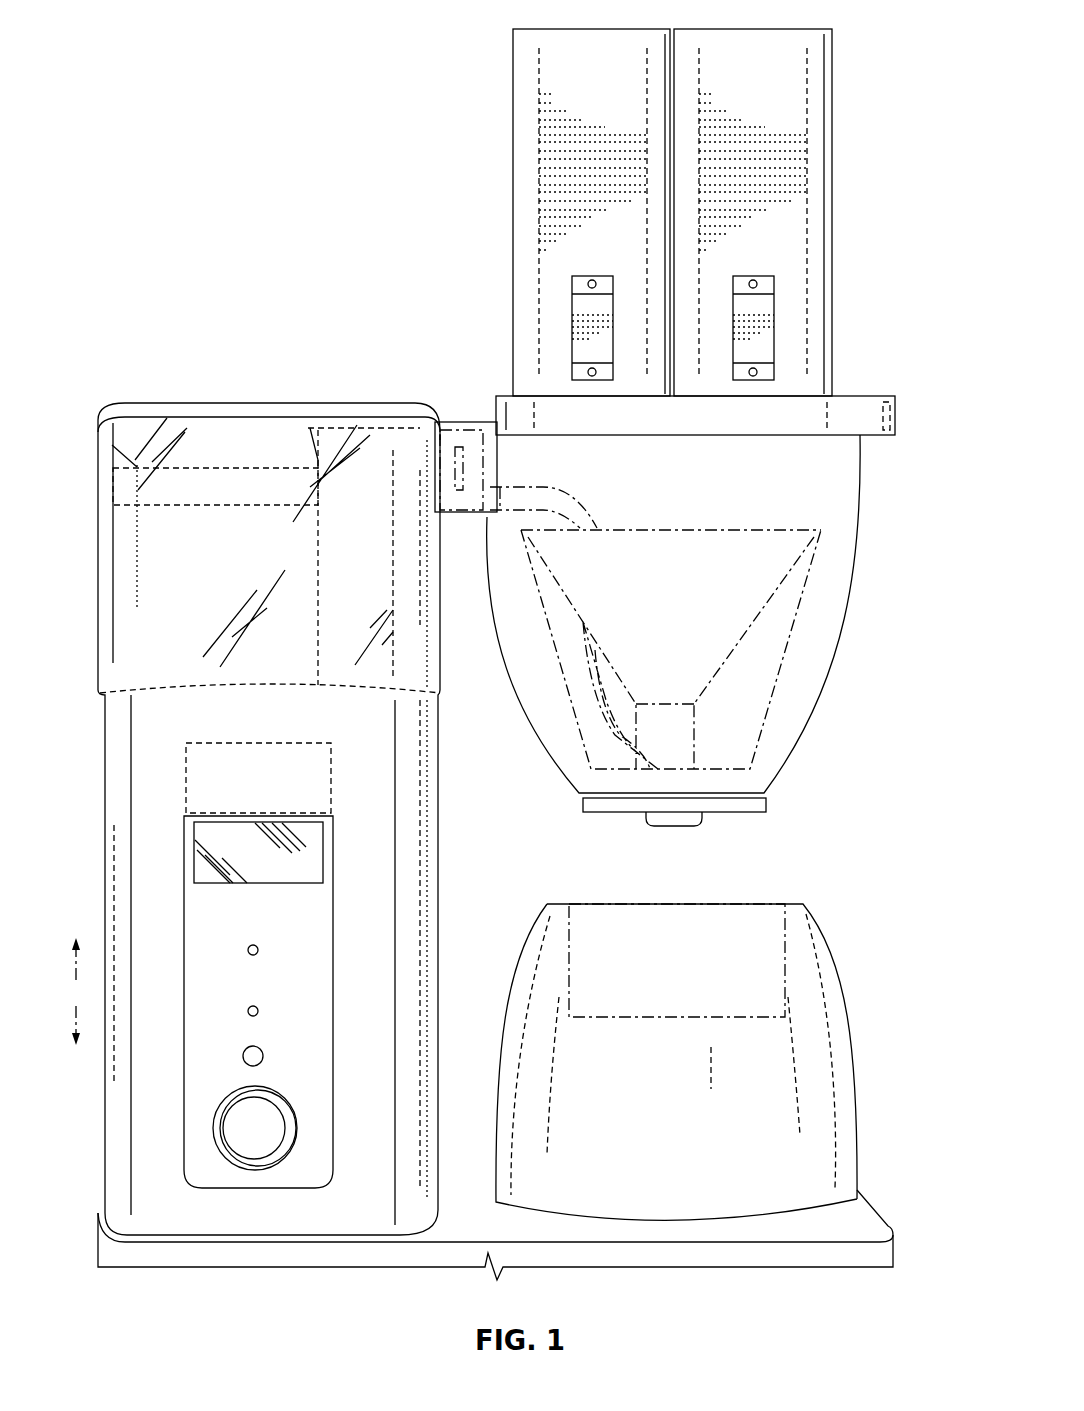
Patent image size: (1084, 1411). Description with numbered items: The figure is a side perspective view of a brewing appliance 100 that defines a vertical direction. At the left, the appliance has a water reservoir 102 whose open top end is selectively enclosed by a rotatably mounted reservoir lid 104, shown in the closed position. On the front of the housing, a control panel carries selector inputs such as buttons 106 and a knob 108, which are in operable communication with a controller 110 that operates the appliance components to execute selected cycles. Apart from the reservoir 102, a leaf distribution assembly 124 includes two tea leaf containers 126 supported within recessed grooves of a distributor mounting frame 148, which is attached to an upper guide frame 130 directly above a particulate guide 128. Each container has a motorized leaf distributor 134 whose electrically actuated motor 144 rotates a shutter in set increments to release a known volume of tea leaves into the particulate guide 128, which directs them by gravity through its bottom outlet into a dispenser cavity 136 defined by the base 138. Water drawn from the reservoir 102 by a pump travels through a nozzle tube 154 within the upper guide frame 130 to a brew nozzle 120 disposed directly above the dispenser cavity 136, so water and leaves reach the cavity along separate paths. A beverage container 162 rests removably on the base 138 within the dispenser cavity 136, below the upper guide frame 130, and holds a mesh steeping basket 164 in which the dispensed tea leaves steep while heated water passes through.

The brewing appliance 100 is at (232, 77).
The water reservoir 102 is at (97, 560).
The reservoir lid 104 is at (175, 402).
The buttons 106 is at (258, 950).
The knob 108 is at (294, 1118).
The controller 110 is at (186, 785).
The brew nozzle 120 is at (677, 824).
The leaf distribution assembly 124 is at (405, 110).
The tea leaf container 126 is at (512, 107).
The particulate guide 128 is at (737, 642).
The upper guide frame 130 is at (859, 504).
The motorized leaf distributor 134 is at (557, 293).
The dispenser cavity 136 is at (790, 870).
The base 138 is at (649, 1248).
The electrically actuated motor 144 is at (591, 334).
The distributor mounting frame 148 is at (893, 415).
The nozzle tube 154 is at (579, 500).
The beverage container 162 is at (839, 1103).
The steeping basket 164 is at (786, 976).